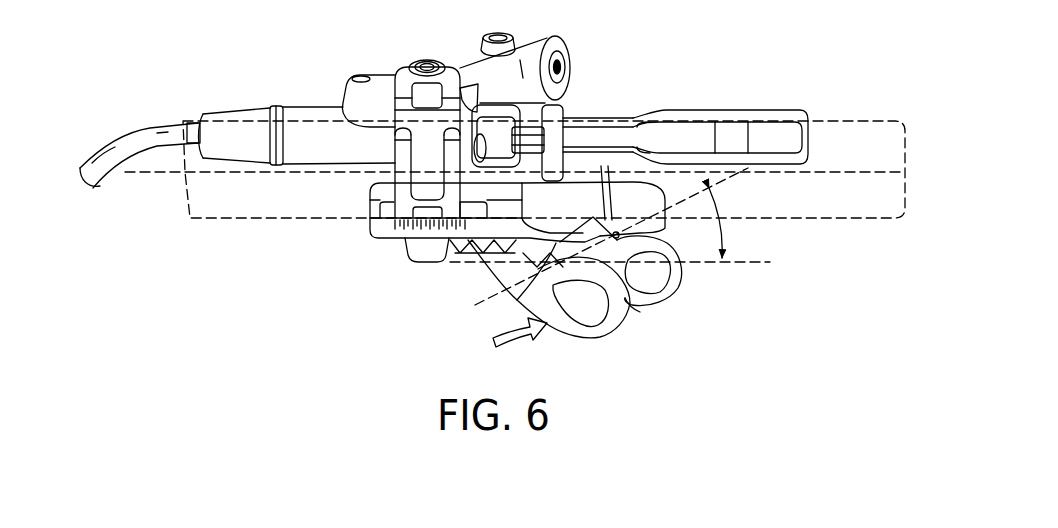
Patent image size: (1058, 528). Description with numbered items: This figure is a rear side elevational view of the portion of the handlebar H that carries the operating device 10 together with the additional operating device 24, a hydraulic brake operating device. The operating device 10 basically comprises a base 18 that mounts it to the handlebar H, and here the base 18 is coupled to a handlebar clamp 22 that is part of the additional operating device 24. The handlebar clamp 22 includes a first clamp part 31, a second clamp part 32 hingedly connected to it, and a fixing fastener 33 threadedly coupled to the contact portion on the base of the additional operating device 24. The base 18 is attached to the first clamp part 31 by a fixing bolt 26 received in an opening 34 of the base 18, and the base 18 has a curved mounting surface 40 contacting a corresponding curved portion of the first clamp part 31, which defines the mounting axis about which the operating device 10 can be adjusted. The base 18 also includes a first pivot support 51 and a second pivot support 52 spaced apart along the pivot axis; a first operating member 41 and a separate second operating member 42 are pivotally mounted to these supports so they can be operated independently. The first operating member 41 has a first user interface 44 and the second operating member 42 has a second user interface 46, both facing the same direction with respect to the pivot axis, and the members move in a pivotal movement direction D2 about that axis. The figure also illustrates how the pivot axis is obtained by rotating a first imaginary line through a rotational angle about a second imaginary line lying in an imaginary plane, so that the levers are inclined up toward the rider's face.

The operating device 10 is at (477, 287).
The base 18 is at (385, 243).
The handlebar clamp 22 is at (392, 148).
The additional operating device 24 is at (303, 106).
The fixing bolt 26 is at (430, 262).
The first clamp part 31 is at (403, 208).
The second clamp part 32 is at (405, 118).
The fixing fastener 33 is at (433, 60).
The opening 34 is at (485, 208).
The curved mounting surface 40 is at (372, 191).
The first operating member 41 is at (606, 340).
The second operating member 42 is at (665, 300).
The first user interface 44 is at (588, 307).
The second user interface 46 is at (658, 268).
The first pivot support 51 is at (511, 300).
The second pivot support 52 is at (627, 303).
The handlebar H is at (854, 120).
The pivotal movement direction D2 is at (527, 343).